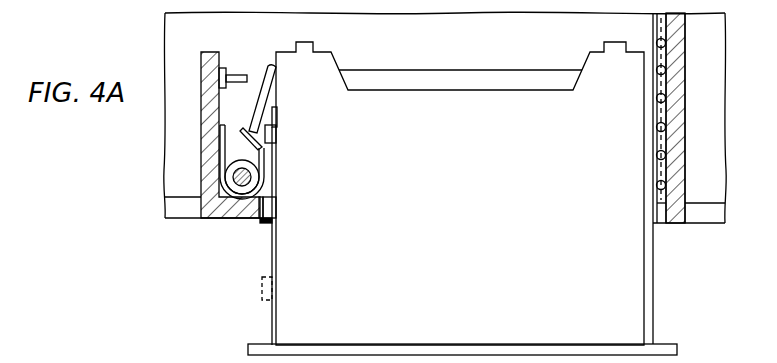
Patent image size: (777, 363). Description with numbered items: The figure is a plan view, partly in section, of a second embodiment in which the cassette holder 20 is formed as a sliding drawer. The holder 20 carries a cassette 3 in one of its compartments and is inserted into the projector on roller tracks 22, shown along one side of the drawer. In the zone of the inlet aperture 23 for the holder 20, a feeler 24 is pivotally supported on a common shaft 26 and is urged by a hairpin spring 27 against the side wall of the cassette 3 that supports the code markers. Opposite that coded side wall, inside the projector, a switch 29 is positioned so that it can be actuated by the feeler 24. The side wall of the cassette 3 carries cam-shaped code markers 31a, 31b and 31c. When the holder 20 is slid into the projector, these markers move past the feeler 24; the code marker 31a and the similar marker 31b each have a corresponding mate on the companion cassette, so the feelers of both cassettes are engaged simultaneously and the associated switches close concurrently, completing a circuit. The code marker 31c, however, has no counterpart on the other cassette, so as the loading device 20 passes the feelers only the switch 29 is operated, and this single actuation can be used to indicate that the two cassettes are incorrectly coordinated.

The cassette 3 is at (478, 243).
The cassette holder 20 is at (250, 348).
The roller tracks 22 is at (665, 128).
The inlet aperture 23 is at (262, 224).
The feeler 24 is at (268, 82).
The common shaft 26 is at (238, 176).
The hairpin spring 27 is at (220, 140).
The switch 29 is at (232, 74).
The code marker 31a is at (278, 133).
The code marker 31b is at (278, 207).
The code marker 31c is at (274, 285).